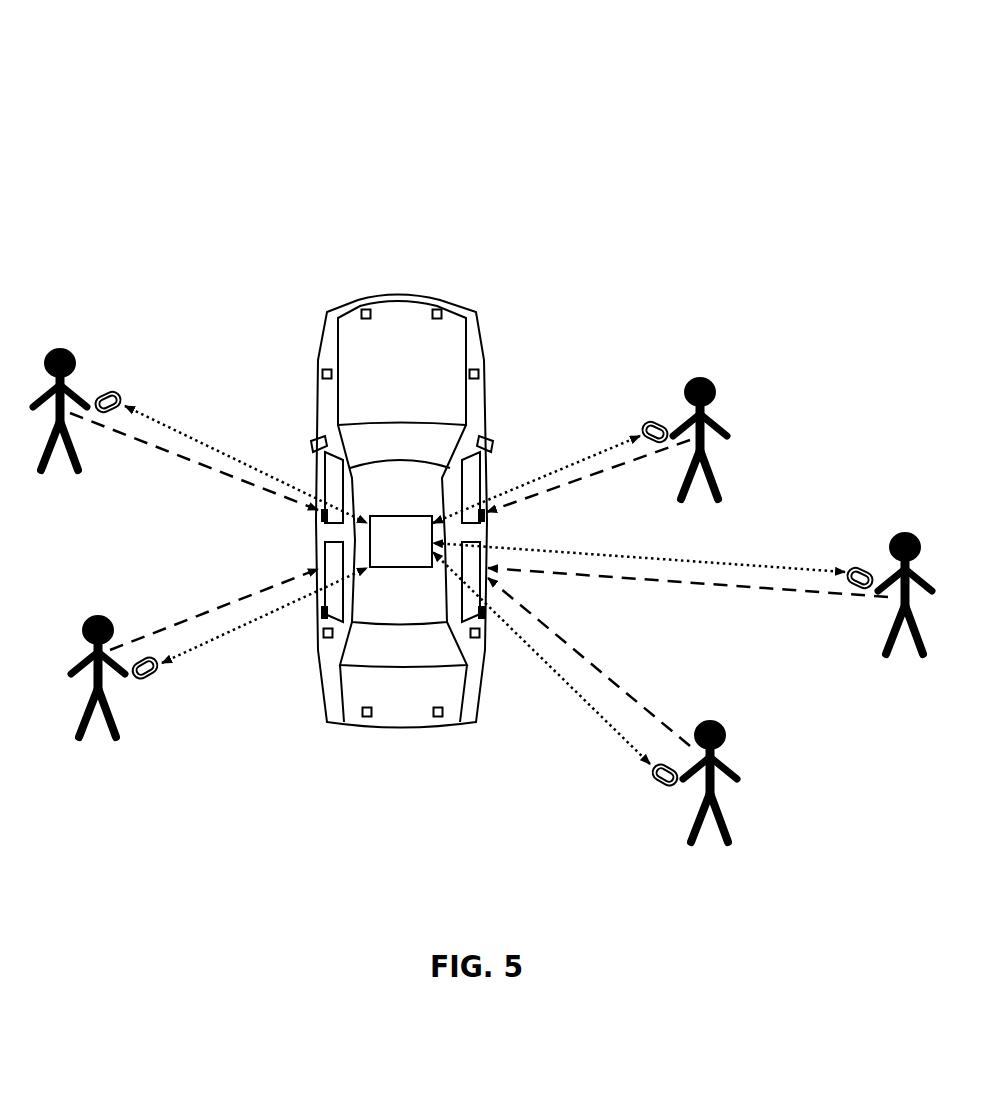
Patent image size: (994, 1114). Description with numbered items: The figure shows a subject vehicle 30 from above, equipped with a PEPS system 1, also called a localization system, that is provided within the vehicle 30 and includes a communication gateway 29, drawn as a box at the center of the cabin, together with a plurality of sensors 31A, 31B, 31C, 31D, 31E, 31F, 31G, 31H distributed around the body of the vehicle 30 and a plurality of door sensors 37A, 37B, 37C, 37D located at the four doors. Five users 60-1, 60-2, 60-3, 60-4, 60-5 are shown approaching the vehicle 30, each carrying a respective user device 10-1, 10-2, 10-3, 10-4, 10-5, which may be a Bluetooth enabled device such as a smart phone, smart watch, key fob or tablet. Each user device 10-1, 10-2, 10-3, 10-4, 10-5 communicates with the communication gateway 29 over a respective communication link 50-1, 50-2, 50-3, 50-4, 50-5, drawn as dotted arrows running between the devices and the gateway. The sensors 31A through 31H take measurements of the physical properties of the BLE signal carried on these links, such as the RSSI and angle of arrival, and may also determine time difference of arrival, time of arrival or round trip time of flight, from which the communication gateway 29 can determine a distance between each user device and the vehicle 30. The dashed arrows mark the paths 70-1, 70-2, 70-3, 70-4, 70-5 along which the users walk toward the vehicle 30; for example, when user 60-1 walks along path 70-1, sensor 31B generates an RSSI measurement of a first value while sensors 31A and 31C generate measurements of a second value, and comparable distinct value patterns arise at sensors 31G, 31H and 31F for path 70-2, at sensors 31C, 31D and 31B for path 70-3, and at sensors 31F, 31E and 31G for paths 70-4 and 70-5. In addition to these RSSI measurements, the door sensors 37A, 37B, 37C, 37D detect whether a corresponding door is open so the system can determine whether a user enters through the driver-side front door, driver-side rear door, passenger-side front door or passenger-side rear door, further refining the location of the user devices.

The PEPS system 1 is at (156, 51).
The vehicle 30 is at (478, 313).
The communication gateway 29 is at (401, 568).
The sensor 31A is at (363, 306).
The sensor 31B is at (322, 374).
The sensor 31C is at (323, 637).
The sensor 31D is at (365, 707).
The sensor 31E is at (439, 717).
The sensor 31F is at (470, 634).
The sensor 31G is at (479, 374).
The sensor 31H is at (440, 306).
The door sensor 37A is at (320, 517).
The door sensor 37B is at (320, 620).
The door sensor 37C is at (485, 620).
The door sensor 37D is at (487, 516).
The user 60-1 is at (65, 347).
The user 60-2 is at (703, 377).
The user 60-3 is at (100, 614).
The user 60-4 is at (722, 732).
The user 60-5 is at (906, 530).
The user device 10-1 is at (110, 392).
The user device 10-2 is at (645, 425).
The user device 10-3 is at (150, 682).
The user device 10-4 is at (662, 785).
The user device 10-5 is at (856, 565).
The communication link 50-1 is at (205, 445).
The communication link 50-2 is at (520, 483).
The communication link 50-3 is at (201, 646).
The communication link 50-4 is at (588, 703).
The communication link 50-5 is at (716, 562).
The path 70-1 is at (178, 456).
The path 70-2 is at (582, 479).
The path 70-3 is at (196, 615).
The path 70-4 is at (648, 712).
The path 70-5 is at (675, 582).